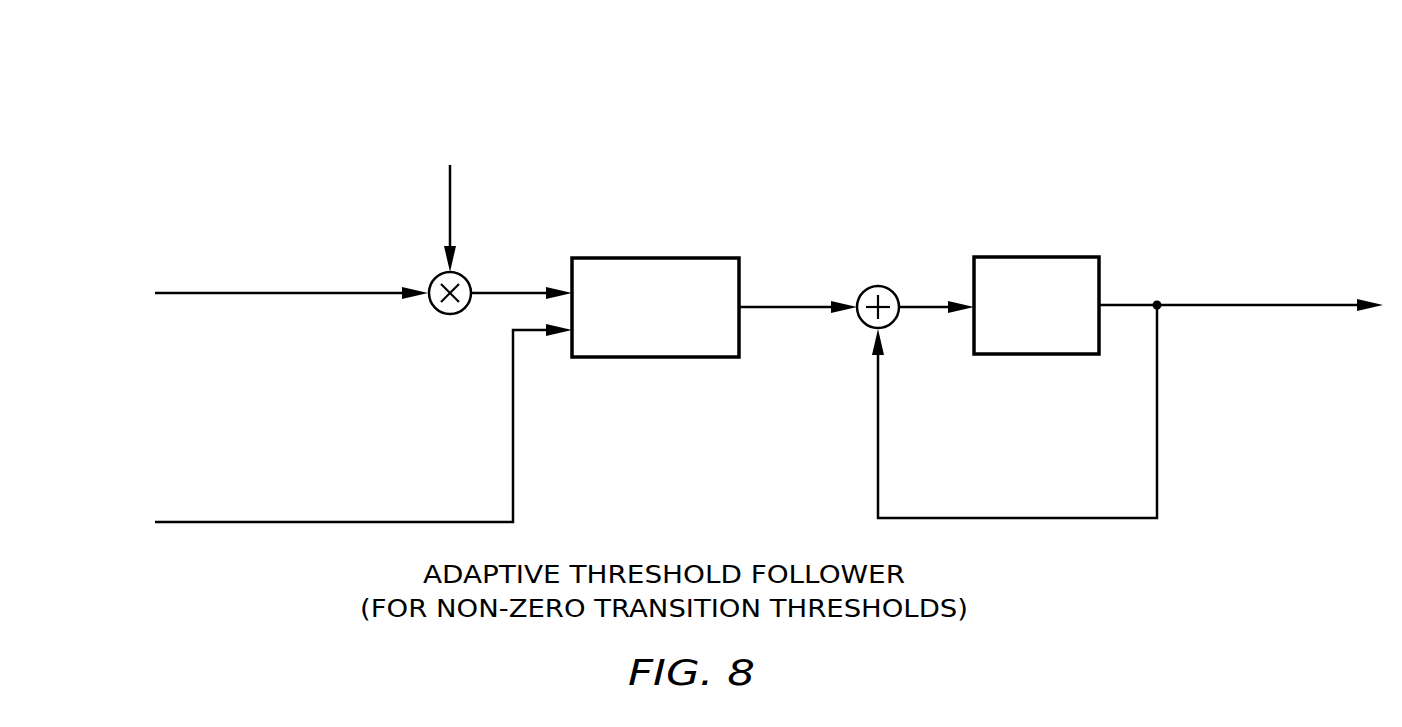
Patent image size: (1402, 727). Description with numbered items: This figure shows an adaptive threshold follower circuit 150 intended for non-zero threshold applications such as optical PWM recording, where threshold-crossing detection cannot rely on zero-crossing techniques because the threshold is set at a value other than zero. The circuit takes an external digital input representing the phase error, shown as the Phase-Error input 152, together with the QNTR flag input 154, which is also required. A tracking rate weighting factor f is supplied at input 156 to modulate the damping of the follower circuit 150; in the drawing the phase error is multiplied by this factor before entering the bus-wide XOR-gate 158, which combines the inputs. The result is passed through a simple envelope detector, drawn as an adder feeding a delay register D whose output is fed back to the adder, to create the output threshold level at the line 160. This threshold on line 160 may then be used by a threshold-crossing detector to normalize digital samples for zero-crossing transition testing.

The follower circuit 150 is at (700, 141).
The phase-error input 152 is at (356, 293).
The QNTR input 154 is at (356, 522).
The tracking rate parameter input f 156 is at (450, 227).
The XOR-gate 158 is at (656, 357).
The line 160 is at (1258, 305).